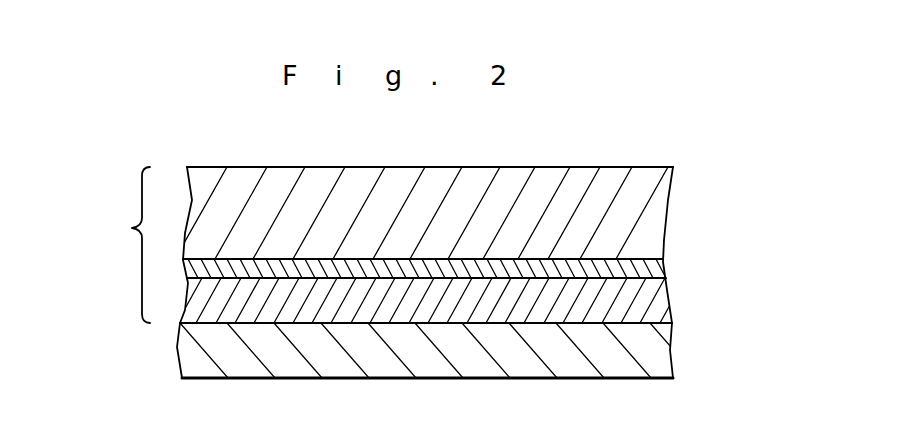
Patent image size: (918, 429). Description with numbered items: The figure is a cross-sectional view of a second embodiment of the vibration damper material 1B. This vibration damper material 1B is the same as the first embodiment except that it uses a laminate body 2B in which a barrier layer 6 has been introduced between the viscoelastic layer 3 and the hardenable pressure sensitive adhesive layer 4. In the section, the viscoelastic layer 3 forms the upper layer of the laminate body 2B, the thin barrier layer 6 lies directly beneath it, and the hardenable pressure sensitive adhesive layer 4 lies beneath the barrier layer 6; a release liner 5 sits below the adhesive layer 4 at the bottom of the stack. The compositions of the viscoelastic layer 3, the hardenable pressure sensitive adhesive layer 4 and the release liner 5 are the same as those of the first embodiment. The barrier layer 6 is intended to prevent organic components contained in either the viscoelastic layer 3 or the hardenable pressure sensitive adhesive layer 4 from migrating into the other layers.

The vibration damper material 1B is at (629, 149).
The laminate body 2B is at (110, 245).
The viscoelastic layer 3 is at (640, 198).
The hardenable pressure sensitive adhesive layer 4 is at (627, 302).
The release liner 5 is at (635, 340).
The barrier layer 6 is at (637, 272).